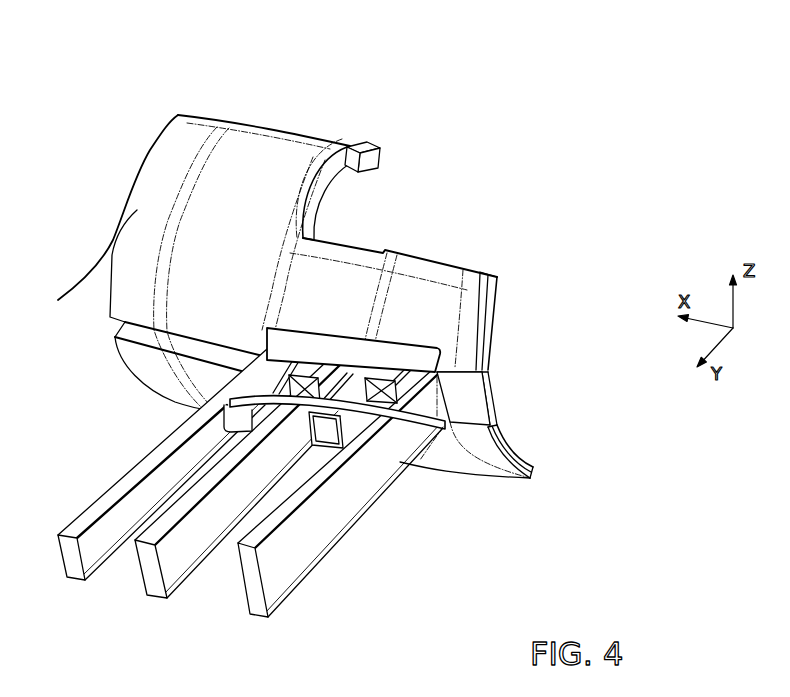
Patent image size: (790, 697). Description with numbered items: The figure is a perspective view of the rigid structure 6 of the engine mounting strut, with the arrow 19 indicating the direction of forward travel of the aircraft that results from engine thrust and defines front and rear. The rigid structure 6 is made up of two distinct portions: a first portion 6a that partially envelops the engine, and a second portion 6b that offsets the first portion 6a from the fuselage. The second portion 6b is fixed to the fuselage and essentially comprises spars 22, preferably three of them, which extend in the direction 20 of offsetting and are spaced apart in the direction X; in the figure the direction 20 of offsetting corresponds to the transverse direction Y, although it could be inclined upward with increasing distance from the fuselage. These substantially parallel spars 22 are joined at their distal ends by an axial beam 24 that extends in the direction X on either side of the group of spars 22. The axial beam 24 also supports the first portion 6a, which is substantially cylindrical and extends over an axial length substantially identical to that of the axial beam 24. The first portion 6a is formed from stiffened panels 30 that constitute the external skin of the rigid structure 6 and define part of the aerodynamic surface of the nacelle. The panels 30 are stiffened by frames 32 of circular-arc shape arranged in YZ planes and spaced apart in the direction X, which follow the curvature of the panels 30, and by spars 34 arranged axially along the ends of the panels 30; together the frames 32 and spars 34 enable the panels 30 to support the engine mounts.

The rigid structure 6 is at (310, 369).
The first portion 6a is at (313, 265).
The second portion 6b is at (274, 517).
The arrow 19 is at (422, 91).
The direction of offsetting 20 is at (417, 498).
The spars 22 is at (253, 595).
The axial beam 24 is at (468, 412).
The stiffened panels 30 is at (298, 272).
The frames 32 is at (322, 194).
The spars 34 is at (365, 144).